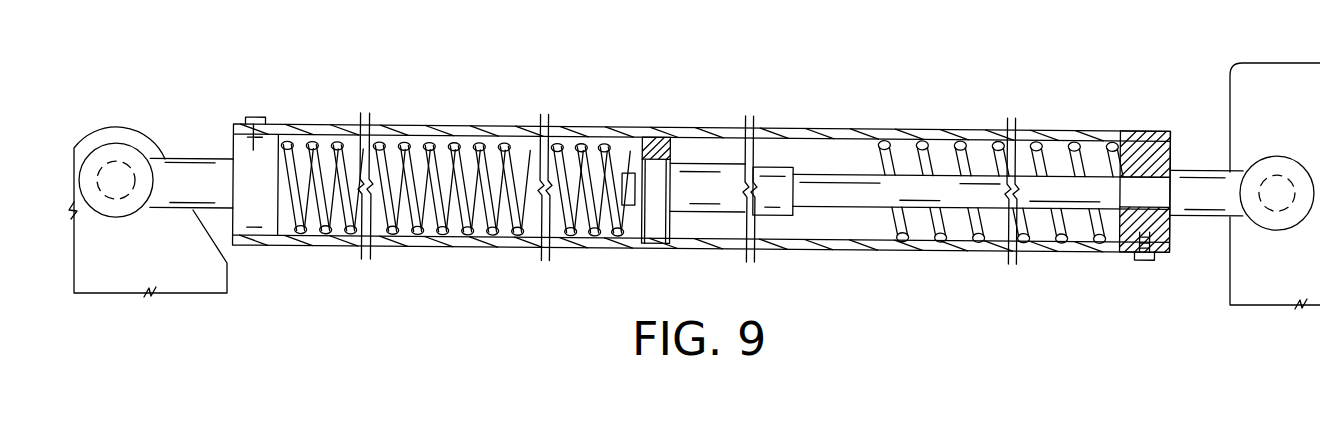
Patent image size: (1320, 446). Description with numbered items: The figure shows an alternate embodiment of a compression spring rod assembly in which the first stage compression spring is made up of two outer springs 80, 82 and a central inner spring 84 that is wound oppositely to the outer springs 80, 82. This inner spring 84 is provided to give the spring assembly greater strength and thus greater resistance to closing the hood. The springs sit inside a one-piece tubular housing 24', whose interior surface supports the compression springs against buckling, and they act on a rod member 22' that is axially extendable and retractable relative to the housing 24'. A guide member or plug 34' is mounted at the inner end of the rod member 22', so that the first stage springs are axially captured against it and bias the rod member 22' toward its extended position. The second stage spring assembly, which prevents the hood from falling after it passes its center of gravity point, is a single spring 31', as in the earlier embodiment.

The outer spring 80 is at (388, 137).
The outer spring 82 is at (567, 130).
The central inner spring 84 is at (573, 237).
The guide member or plug 34' is at (667, 222).
The rod member 22' is at (981, 254).
The tubular housing 24' is at (1000, 240).
The second stage spring 31' is at (766, 228).